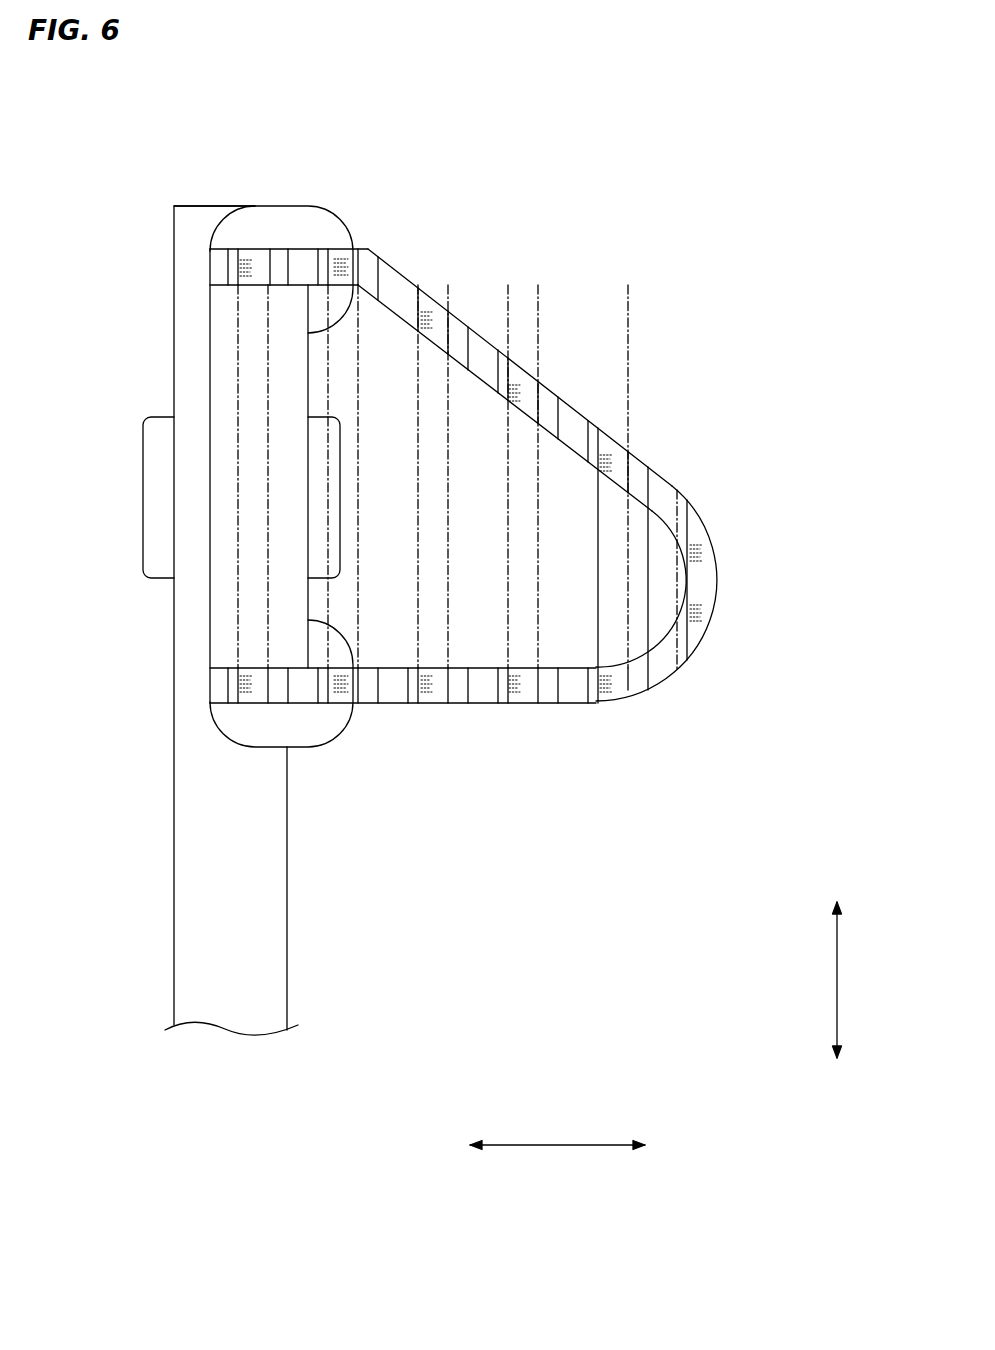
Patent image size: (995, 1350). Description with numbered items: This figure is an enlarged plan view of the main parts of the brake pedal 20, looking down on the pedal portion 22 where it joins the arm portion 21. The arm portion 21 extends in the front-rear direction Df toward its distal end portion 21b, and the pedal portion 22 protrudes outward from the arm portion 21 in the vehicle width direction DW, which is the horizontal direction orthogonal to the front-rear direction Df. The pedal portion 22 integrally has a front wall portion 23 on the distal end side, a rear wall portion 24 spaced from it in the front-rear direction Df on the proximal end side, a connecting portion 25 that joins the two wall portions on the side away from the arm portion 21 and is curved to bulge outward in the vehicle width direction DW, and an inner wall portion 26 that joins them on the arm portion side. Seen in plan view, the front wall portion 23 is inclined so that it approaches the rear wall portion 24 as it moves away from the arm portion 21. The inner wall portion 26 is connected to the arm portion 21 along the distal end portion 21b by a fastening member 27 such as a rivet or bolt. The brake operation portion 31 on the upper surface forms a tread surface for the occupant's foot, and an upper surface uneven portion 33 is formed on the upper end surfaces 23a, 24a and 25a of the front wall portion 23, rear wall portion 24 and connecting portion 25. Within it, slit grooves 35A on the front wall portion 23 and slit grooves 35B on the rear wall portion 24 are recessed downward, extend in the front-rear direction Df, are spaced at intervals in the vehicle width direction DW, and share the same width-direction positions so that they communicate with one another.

The brake pedal 20 is at (168, 913).
The arm portion 21 is at (273, 968).
The distal end portion 21b is at (173, 258).
The pedal portion 22 is at (717, 573).
The front wall portion 23 is at (524, 373).
The upper end surface of the front wall portion 23a is at (613, 462).
The rear wall portion 24 is at (523, 703).
The upper end surface of the rear wall portion 24a is at (612, 693).
The connecting portion 25 is at (713, 610).
The upper end surface of the connecting portion 25a is at (702, 543).
The inner wall portion 26 is at (317, 377).
The fastening member 27 is at (143, 540).
The brake operation portion 31 is at (557, 388).
The upper surface uneven portion 33 is at (457, 697).
The slit grooves 35A is at (318, 272).
The slit grooves 35B is at (323, 690).
The front-rear direction Df is at (852, 980).
The vehicle width direction DW is at (557, 1130).